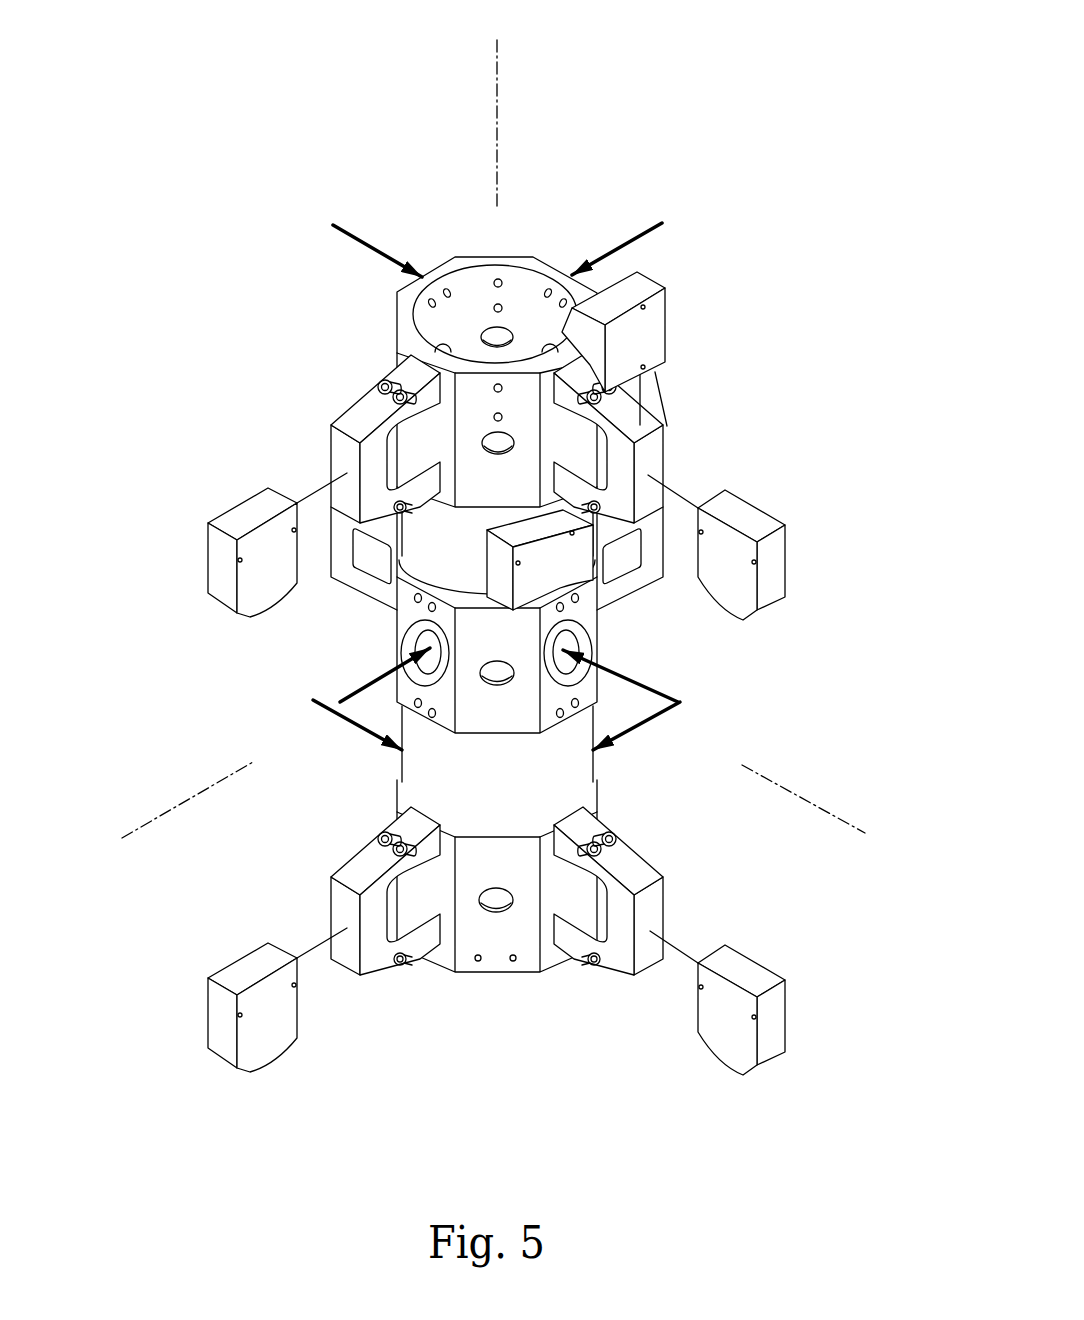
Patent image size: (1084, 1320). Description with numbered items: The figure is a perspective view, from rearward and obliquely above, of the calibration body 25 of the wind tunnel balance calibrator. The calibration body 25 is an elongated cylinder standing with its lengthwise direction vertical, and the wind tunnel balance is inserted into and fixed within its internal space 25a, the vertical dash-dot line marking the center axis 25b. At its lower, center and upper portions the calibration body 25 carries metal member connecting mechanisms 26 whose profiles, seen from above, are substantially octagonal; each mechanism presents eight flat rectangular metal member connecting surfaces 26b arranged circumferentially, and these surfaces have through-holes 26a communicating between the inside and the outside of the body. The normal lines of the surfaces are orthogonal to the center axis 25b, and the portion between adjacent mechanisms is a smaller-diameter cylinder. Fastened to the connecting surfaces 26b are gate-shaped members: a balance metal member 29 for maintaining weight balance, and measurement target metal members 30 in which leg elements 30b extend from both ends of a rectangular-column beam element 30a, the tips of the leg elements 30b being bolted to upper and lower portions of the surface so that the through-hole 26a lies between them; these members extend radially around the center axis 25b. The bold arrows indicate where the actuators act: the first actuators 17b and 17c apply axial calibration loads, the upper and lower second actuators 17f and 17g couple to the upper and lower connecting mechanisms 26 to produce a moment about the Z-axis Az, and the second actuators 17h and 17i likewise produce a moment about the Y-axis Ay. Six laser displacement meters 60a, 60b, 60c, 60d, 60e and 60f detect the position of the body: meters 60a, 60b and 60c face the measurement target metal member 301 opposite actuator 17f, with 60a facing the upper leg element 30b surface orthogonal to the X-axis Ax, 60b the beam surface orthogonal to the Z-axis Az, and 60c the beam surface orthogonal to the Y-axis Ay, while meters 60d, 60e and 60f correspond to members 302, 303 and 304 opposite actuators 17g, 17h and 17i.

The calibration body 25 is at (268, 214).
The internal space 25a is at (535, 312).
The center axis 25b is at (500, 108).
The metal member connecting mechanism 26 is at (431, 716).
The through-hole 26a is at (423, 644).
The metal member connecting surface 26b is at (566, 702).
The balance metal member 29 is at (355, 586).
The measurement target metal member 30 is at (547, 698).
The measurement target metal member 301 is at (658, 439).
The measurement target metal member 302 is at (691, 924).
The measurement target metal member 303 is at (348, 421).
The measurement target metal member 304 is at (355, 872).
The beam element 30a is at (656, 914).
The leg element 30b is at (623, 868).
The laser displacement meter 60a is at (613, 332).
The laser displacement meter 60b is at (540, 560).
The laser displacement meter 60c is at (716, 547).
The laser displacement meter 60d is at (717, 1003).
The laser displacement meter 60e is at (277, 545).
The laser displacement meter 60f is at (277, 1000).
The first actuator 17b is at (313, 675).
The first actuator 17c is at (675, 676).
The second actuator 17f is at (372, 236).
The second actuator 17g is at (278, 725).
The second actuator 17h is at (681, 237).
The second actuator 17i is at (725, 724).
The X-axis Ax is at (502, 109).
The Y-axis Ay is at (823, 811).
The Z-axis Az is at (169, 810).